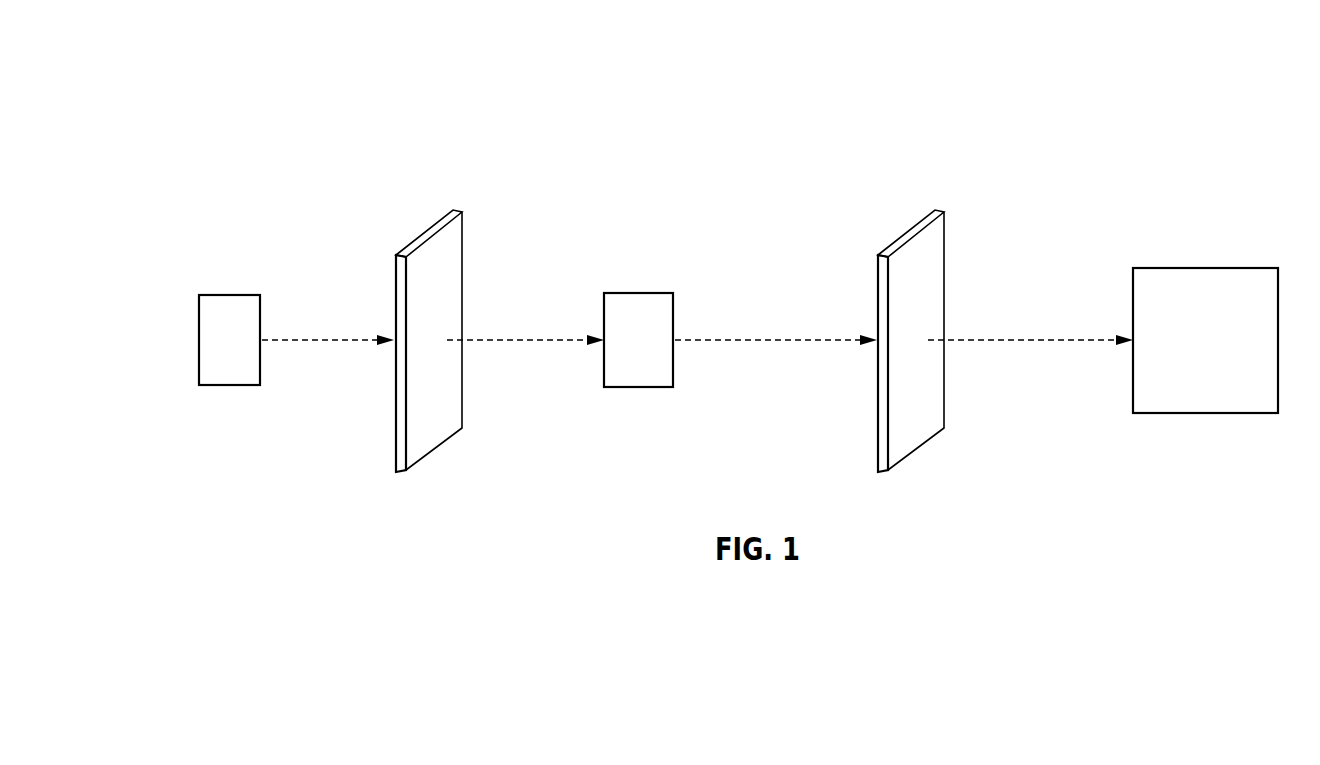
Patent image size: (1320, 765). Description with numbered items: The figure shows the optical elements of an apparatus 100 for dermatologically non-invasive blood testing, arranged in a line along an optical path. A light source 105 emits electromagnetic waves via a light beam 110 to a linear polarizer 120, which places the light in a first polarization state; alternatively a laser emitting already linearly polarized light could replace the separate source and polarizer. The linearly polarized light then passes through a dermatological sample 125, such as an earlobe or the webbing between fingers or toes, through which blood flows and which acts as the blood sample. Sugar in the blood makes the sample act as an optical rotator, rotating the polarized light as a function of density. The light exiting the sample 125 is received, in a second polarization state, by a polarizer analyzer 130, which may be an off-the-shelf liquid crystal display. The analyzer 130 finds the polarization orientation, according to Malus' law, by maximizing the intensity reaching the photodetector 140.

The apparatus 100 is at (214, 86).
The light source 105 is at (228, 295).
The light beam 110 is at (297, 340).
The linear polarizer 120 is at (457, 206).
The dermatological sample 125 is at (638, 293).
The polarizer analyzer 130 is at (939, 206).
The photodetector 140 is at (1204, 267).